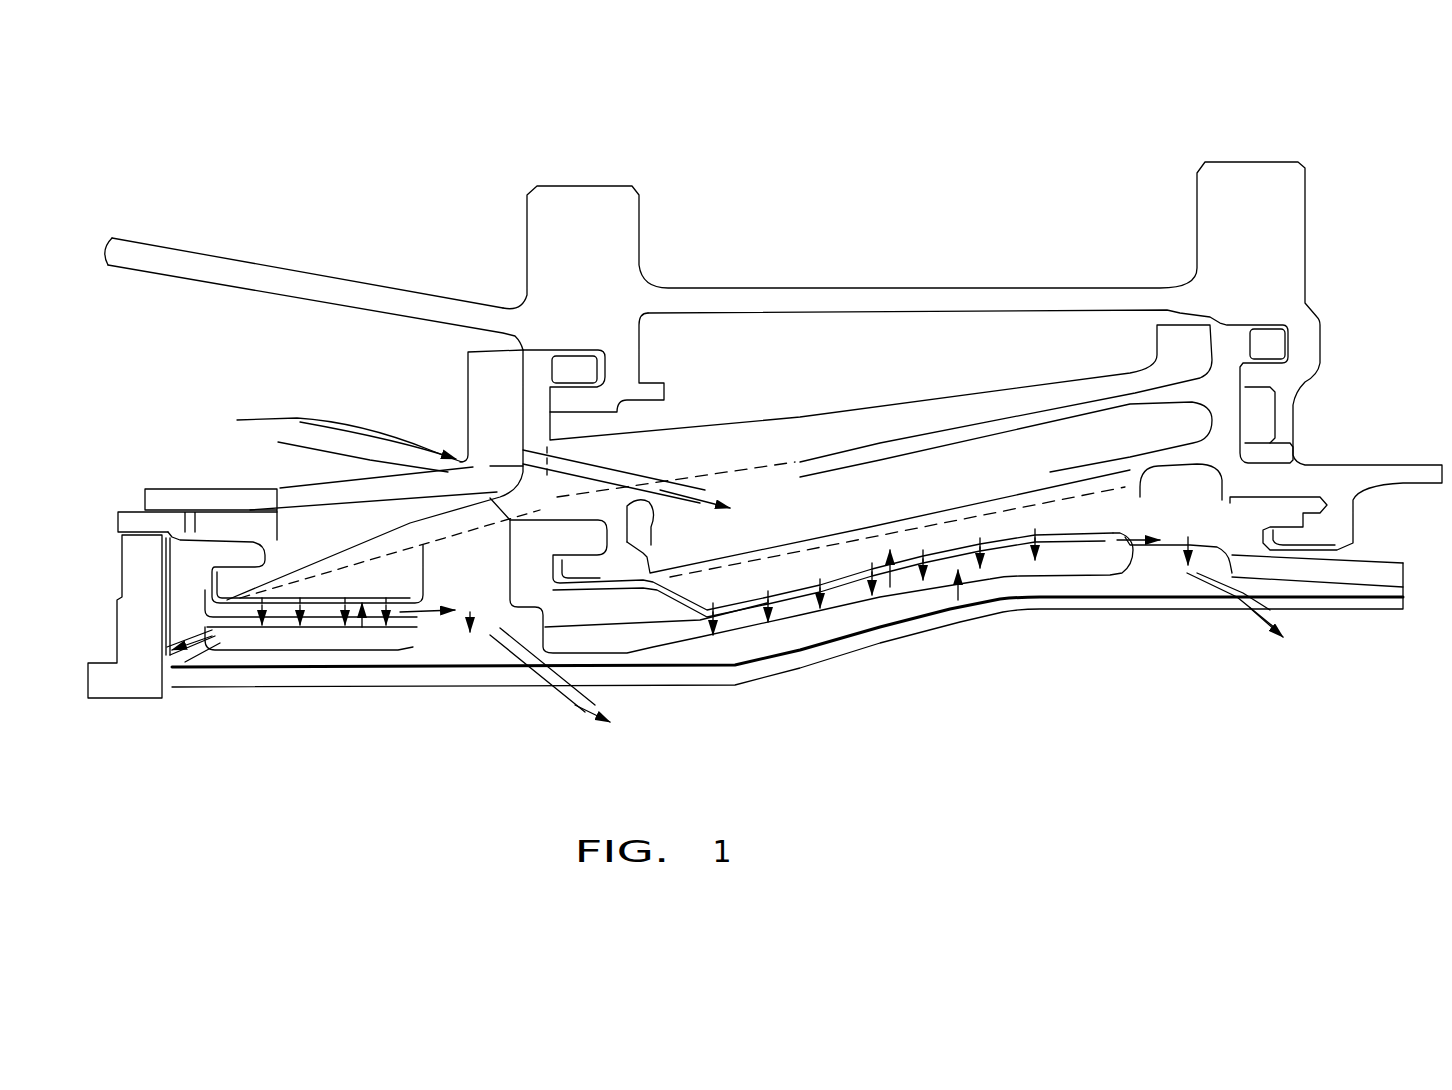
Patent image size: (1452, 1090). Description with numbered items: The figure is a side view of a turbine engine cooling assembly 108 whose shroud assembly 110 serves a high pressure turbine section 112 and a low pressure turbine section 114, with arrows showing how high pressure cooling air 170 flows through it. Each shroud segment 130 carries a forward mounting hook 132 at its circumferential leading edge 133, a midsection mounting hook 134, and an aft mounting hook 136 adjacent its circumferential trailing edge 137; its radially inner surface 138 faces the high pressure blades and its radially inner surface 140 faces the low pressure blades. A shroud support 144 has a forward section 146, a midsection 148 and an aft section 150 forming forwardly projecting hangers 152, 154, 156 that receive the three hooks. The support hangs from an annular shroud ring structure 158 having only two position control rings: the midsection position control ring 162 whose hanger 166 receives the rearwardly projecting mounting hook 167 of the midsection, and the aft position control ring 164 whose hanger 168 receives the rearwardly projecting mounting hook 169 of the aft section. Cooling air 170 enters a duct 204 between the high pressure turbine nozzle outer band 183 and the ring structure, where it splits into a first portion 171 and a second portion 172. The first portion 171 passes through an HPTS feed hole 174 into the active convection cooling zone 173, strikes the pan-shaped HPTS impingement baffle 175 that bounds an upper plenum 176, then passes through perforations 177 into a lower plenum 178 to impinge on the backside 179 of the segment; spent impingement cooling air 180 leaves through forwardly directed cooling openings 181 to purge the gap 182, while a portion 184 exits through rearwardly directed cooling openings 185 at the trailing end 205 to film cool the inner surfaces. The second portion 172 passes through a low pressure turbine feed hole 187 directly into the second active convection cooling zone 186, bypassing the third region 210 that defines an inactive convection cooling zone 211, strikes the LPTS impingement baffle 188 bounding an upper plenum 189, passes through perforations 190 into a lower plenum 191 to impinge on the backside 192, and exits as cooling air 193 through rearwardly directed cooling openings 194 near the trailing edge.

The turbine engine cooling assembly 108 is at (605, 155).
The shroud assembly 110 is at (235, 135).
The high pressure turbine section 112 is at (245, 318).
The low pressure turbine section 114 is at (1100, 322).
The shroud segment 130 is at (1040, 607).
The forward mounting hook 132 is at (247, 550).
The circumferential leading edge 133 is at (178, 757).
The midsection mounting hook 134 is at (580, 545).
The aft mounting hook 136 is at (1303, 513).
The circumferential trailing edge 137 is at (1167, 665).
The radially inner surface of high pressure turbine section 138 is at (297, 692).
The radially inner surface of low pressure turbine section 140 is at (1357, 612).
The shroud support 144 is at (905, 440).
The forward section 146 is at (273, 489).
The midsection 148 is at (537, 510).
The aft section 150 is at (1288, 478).
The forwardly projecting hanger 152 is at (238, 580).
The forwardly projecting hanger 154 is at (573, 567).
The forwardly projecting hanger 156 is at (1310, 538).
The annular shroud ring structure 158 is at (1020, 285).
The midsection position control ring 162 is at (630, 218).
The aft position control ring 164 is at (1292, 222).
The axially forwardly projecting hanger 166 is at (580, 400).
The rearwardly projecting mounting hook 167 is at (568, 375).
The axially forwardly projecting hanger 168 is at (1257, 378).
The rearwardly projecting mounting hook 169 is at (1257, 343).
The high pressure cooling air 170 is at (257, 420).
The first portion of high pressure cooling air 171 is at (330, 460).
The second portion of high pressure cooling air 172 is at (385, 428).
The high pressure turbine section active convection cooling zone 173 is at (395, 590).
The HPTS feed hole 174 is at (352, 512).
The HPTS impingement baffle 175 is at (427, 578).
The upper HPTS cavity or plenum 176 is at (405, 648).
The perforations 177 is at (267, 612).
The lower HPTS cavity or plenum 178 is at (493, 640).
The backside of shroud segment 179 is at (365, 615).
The spent impingement cooling air 180 is at (190, 647).
The forwardly directed cooling openings 181 is at (198, 633).
The gap 182 is at (168, 697).
The high pressure turbine nozzle outer band 183 is at (142, 690).
The portion of high pressure cooling air 184 is at (573, 698).
The rearwardly directed cooling openings 185 is at (573, 677).
The low pressure turbine section active convection cooling zone 186 is at (896, 495).
The low pressure turbine feed hole 187 is at (670, 490).
The LPTS impingement baffle 188 is at (1117, 548).
The upper LPTS cavity or plenum 189 is at (892, 598).
The perforations 190 is at (817, 597).
The lower LPTS cavity or plenum 191 is at (962, 590).
The backside of shroud segment 192 is at (870, 600).
The cooling air 193 is at (1253, 618).
The rearwardly directed cooling openings 194 is at (1257, 615).
The duct 204 is at (143, 342).
The trailing end of high pressure turbine section 205 is at (553, 713).
The third region 210 is at (876, 362).
The inactive convection cooling zone 211 is at (778, 340).